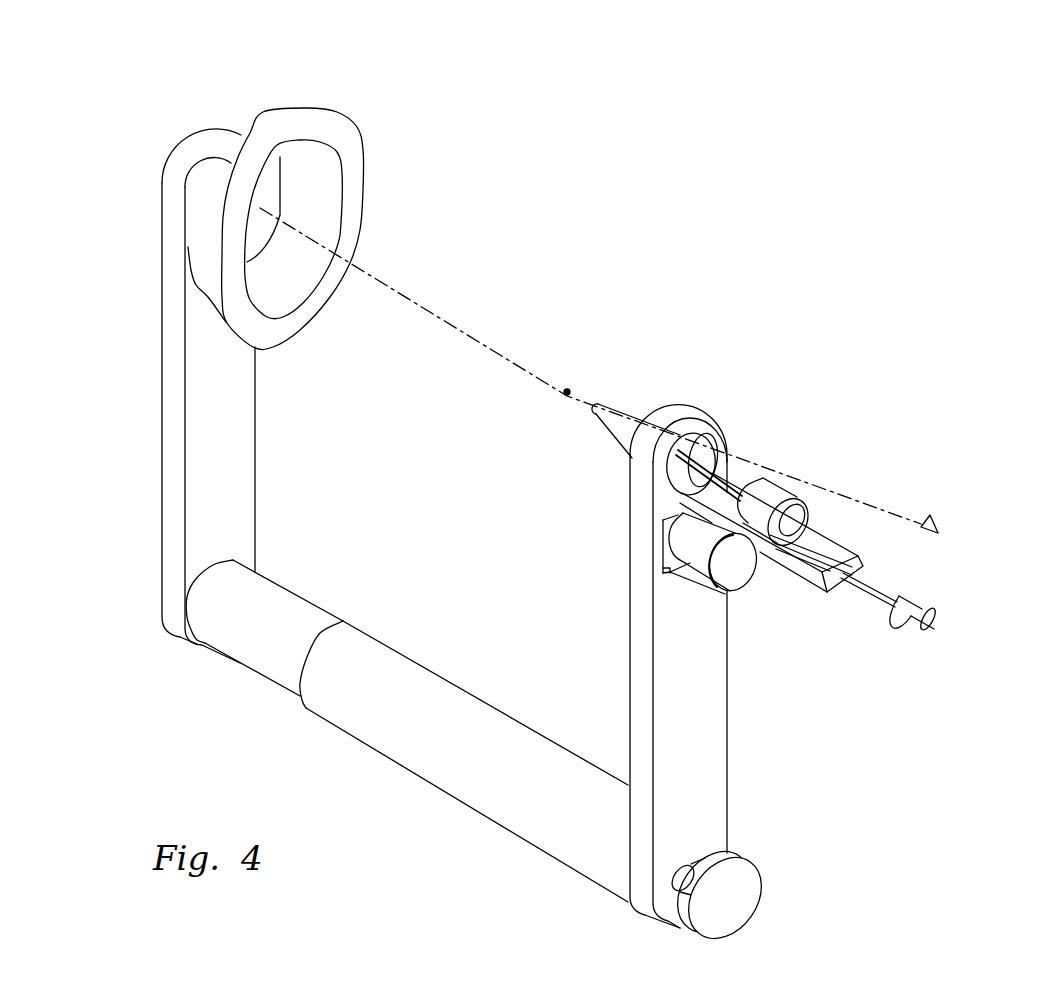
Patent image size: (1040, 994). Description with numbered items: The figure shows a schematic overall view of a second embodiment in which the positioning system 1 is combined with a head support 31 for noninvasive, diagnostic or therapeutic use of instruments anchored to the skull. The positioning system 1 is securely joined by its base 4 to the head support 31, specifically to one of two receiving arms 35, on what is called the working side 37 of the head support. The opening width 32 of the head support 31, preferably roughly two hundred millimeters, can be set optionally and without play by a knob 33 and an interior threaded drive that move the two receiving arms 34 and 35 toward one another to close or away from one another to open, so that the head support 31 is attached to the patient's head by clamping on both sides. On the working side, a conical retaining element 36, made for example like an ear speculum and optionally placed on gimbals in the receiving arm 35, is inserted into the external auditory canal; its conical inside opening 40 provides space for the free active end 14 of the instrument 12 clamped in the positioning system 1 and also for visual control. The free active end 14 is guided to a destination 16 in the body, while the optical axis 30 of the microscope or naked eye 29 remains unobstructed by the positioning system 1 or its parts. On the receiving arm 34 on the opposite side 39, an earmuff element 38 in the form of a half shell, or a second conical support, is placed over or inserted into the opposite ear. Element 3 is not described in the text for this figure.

The positioning system 1 is at (910, 578).
The drive unit 3 is at (762, 580).
The base 4 is at (725, 594).
The instrument 12 is at (797, 518).
The free active end 14 is at (583, 398).
The destination 16 is at (567, 388).
The naked eye 29 is at (945, 518).
The optical axis 30 is at (860, 498).
The head support 31 is at (777, 332).
The opening width 32 is at (183, 427).
The knob 33 is at (740, 887).
The receiving arm 34 is at (212, 136).
The receiving arm 35 is at (700, 758).
The conical retaining element 36 is at (632, 414).
The working side 37 is at (682, 390).
The earmuff element 38 is at (344, 133).
The opposite side 39 is at (310, 97).
The conical inside opening 40 is at (713, 441).